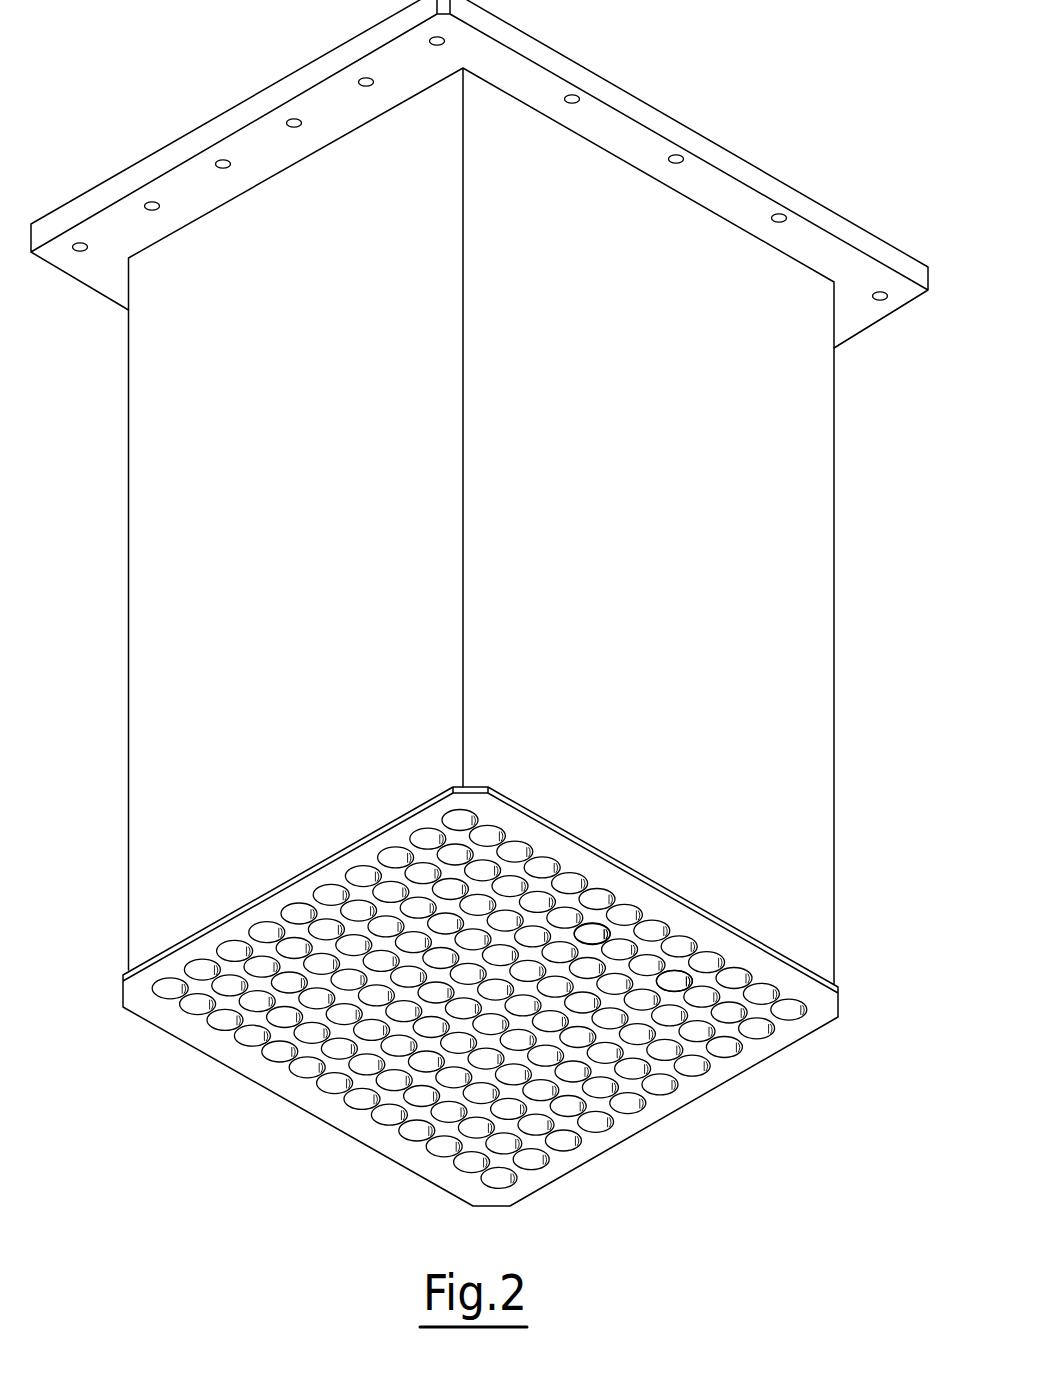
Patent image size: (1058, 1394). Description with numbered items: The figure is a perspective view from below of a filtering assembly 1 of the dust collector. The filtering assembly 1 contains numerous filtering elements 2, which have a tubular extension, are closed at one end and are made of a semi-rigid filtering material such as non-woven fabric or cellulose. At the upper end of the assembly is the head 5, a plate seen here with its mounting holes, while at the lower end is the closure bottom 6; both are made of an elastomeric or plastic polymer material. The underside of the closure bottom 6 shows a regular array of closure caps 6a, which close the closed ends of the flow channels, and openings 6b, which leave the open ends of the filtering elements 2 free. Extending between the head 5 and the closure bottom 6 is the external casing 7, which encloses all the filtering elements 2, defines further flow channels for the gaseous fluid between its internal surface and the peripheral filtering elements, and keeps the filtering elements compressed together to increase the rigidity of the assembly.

The filtering assembly 1 is at (492, 603).
The filtering elements 2 is at (460, 1040).
The head 5 is at (697, 140).
The closure bottom 6 is at (497, 987).
The closure caps 6a is at (313, 1015).
The openings 6b is at (678, 987).
The external casing 7 is at (228, 448).